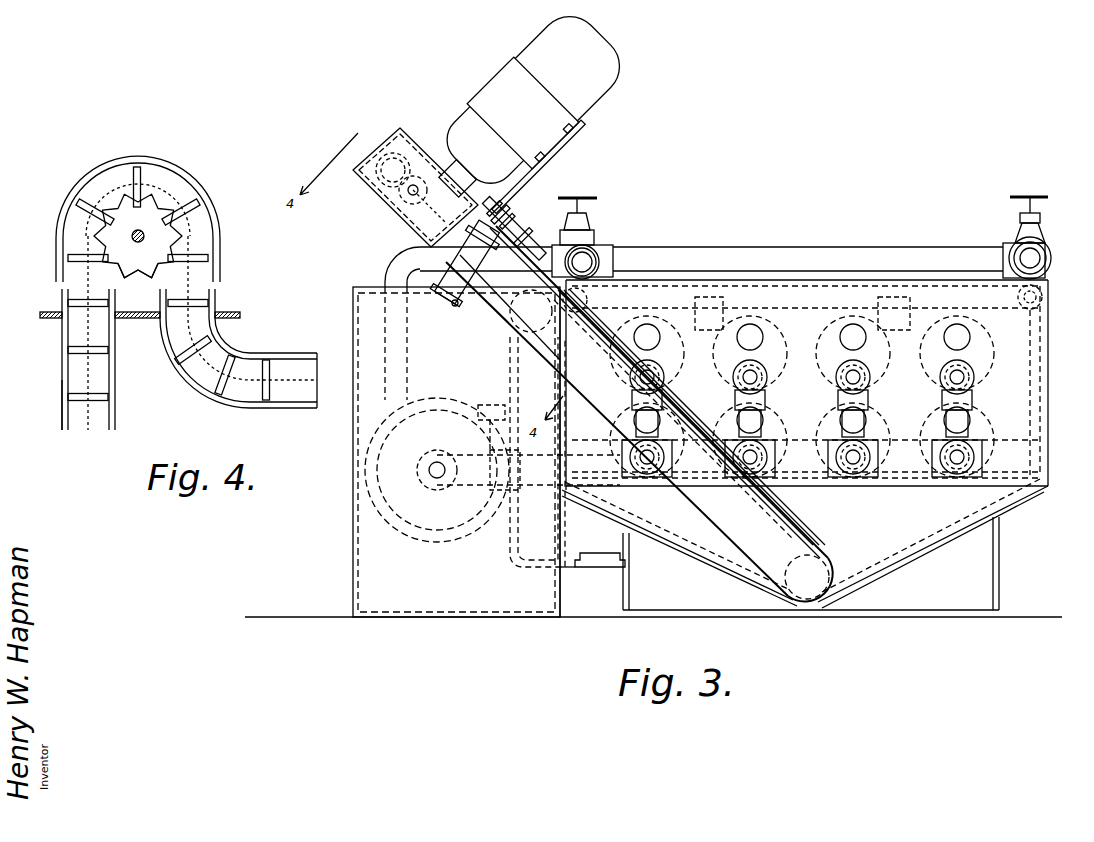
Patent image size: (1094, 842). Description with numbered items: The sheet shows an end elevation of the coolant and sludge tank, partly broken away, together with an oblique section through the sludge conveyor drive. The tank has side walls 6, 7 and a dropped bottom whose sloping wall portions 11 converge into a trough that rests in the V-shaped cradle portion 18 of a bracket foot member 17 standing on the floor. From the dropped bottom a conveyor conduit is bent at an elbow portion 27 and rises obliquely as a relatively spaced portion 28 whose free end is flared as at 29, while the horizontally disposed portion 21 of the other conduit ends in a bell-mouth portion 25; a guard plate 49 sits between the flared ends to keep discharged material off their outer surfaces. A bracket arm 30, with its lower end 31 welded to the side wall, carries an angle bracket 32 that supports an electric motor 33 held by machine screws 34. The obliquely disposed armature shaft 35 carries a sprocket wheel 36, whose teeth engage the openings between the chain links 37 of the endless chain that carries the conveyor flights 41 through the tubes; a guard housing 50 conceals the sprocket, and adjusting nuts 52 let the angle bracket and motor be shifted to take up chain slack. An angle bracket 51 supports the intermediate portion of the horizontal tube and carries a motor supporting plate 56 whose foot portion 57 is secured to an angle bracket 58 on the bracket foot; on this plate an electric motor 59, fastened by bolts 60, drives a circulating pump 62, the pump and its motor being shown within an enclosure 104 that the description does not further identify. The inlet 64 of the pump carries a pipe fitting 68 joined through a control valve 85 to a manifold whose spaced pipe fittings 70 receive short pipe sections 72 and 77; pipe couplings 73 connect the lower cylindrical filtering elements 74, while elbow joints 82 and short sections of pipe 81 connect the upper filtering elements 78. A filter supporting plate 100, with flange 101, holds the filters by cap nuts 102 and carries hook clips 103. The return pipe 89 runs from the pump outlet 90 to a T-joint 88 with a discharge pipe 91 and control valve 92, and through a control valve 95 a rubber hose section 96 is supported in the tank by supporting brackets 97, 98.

In FIG. 3, the side wall 6 is at (562, 430).
In FIG. 3, the side wall 7 is at (1048, 356).
In FIG. 3, the sloping wall portions 11 is at (692, 558).
In FIG. 3, the bracket foot member 17 is at (630, 573).
In FIG. 3, the V-shaped cradle portion 18 is at (882, 574).
In FIG. 4, the horizontally disposed portion 21 is at (195, 372).
In FIG. 3, the horizontally disposed portion 21 is at (508, 316).
In FIG. 4, the bell-mouth portion 25 is at (217, 292).
In FIG. 3, the elbow portion 27 is at (830, 572).
In FIG. 4, the relatively spaced portion 28 is at (62, 392).
In FIG. 3, the relatively spaced portion 28 is at (610, 430).
In FIG. 4, the flared portion 29 is at (62, 292).
In FIG. 3, the flared portion 29 is at (448, 298).
In FIG. 3, the bracket arm 30 is at (537, 246).
In FIG. 3, the lower end of bracket arm 31 is at (595, 322).
In FIG. 3, the angle bracket 32 is at (560, 147).
In FIG. 3, the electric motor 33 is at (540, 57).
In FIG. 3, the machine screws 34 is at (547, 140).
In FIG. 4, the armature shaft 35 is at (137, 241).
In FIG. 3, the armature shaft 35 is at (446, 162).
In FIG. 4, the sprocket wheel 36 is at (138, 278).
In FIG. 4, the chain links 37 is at (182, 236).
In FIG. 3, the chain links 37 is at (405, 200).
In FIG. 4, the conveyor flights 41 is at (122, 174).
In FIG. 3, the conveyor flights 41 is at (385, 178).
In FIG. 4, the guard plate 49 is at (238, 318).
In FIG. 3, the guard plate 49 is at (452, 306).
In FIG. 4, the guard housing 50 is at (197, 182).
In FIG. 3, the guard housing 50 is at (398, 128).
In FIG. 3, the angle bracket 51 is at (510, 362).
In FIG. 3, the adjusting nuts 52 is at (515, 220).
In FIG. 3, the motor supporting plate 56 is at (512, 505).
In FIG. 3, the foot portion 57 is at (590, 568).
In FIG. 3, the angle bracket 58 is at (593, 553).
In FIG. 3, the electric motor 59 is at (405, 530).
In FIG. 3, the bolts 60 is at (490, 520).
In FIG. 3, the circulating pump 62 is at (392, 512).
In FIG. 3, the inlet 64 is at (417, 470).
In FIG. 3, the pipe fitting 68 is at (810, 482).
In FIG. 3, the pipe fittings 70 is at (640, 490).
In FIG. 3, the short pipe section 72 is at (950, 410).
In FIG. 3, the pipe coupling 73 is at (770, 400).
In FIG. 3, the filtering element 74 is at (830, 425).
In FIG. 3, the short pipe section 77 is at (853, 484).
In FIG. 3, the filtering elements 78 is at (790, 345).
In FIG. 3, the short section of pipe 81 is at (768, 378).
In FIG. 3, the elbow joint 82 is at (745, 360).
In FIG. 3, the control valve 85 is at (480, 488).
In FIG. 3, the T-joint 88 is at (1003, 250).
In FIG. 3, the return pipe 89 is at (792, 247).
In FIG. 3, the outlet 90 is at (395, 268).
In FIG. 3, the discharge pipe 91 is at (1051, 258).
In FIG. 3, the control valve 92 is at (1018, 232).
In FIG. 3, the control valve 95 is at (592, 236).
In FIG. 3, the rubber hose section 96 is at (613, 263).
In FIG. 3, the supporting bracket 97 is at (588, 300).
In FIG. 3, the supporting bracket 98 is at (1022, 305).
In FIG. 3, the filter supporting plate 100 is at (972, 420).
In FIG. 3, the flange 101 is at (760, 340).
In FIG. 3, the cap nuts 102 is at (868, 420).
In FIG. 3, the hook clips 103 is at (723, 312).
In FIG. 3, the pump housing 104 is at (353, 540).